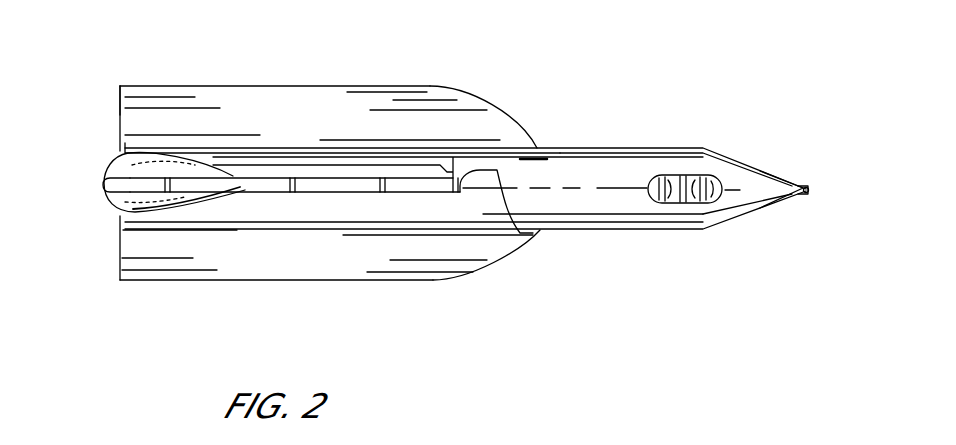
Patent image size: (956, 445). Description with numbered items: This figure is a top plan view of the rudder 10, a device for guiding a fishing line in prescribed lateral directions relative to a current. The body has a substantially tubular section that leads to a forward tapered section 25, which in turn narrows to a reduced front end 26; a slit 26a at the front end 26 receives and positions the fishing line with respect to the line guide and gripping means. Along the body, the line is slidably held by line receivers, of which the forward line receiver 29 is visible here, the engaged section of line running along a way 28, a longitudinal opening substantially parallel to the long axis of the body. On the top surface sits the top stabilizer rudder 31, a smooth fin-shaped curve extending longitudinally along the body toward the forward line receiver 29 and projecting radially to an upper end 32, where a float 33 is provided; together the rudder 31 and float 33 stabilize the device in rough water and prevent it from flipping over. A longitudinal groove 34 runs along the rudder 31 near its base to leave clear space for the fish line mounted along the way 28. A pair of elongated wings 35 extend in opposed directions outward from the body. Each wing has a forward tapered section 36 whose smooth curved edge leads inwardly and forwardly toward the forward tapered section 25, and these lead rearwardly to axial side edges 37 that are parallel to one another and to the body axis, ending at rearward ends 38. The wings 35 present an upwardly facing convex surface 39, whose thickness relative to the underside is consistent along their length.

The rudder 10 is at (612, 53).
The forward tapered section 25 is at (765, 192).
The reduced front end 26 is at (806, 195).
The slit 26a is at (803, 187).
The way 28 is at (627, 185).
The forward line receiver 29 is at (700, 175).
The top stabilizer rudder 31 is at (306, 193).
The upper end 32 is at (113, 184).
The float 33 is at (136, 170).
The longitudinal groove 34 is at (533, 233).
The wings 35 is at (117, 113).
The forward tapered sections 36 is at (490, 128).
The axial side edges 37 is at (218, 86).
The rearward ends 38 is at (118, 100).
The upwardly facing convex surface 39 is at (280, 121).